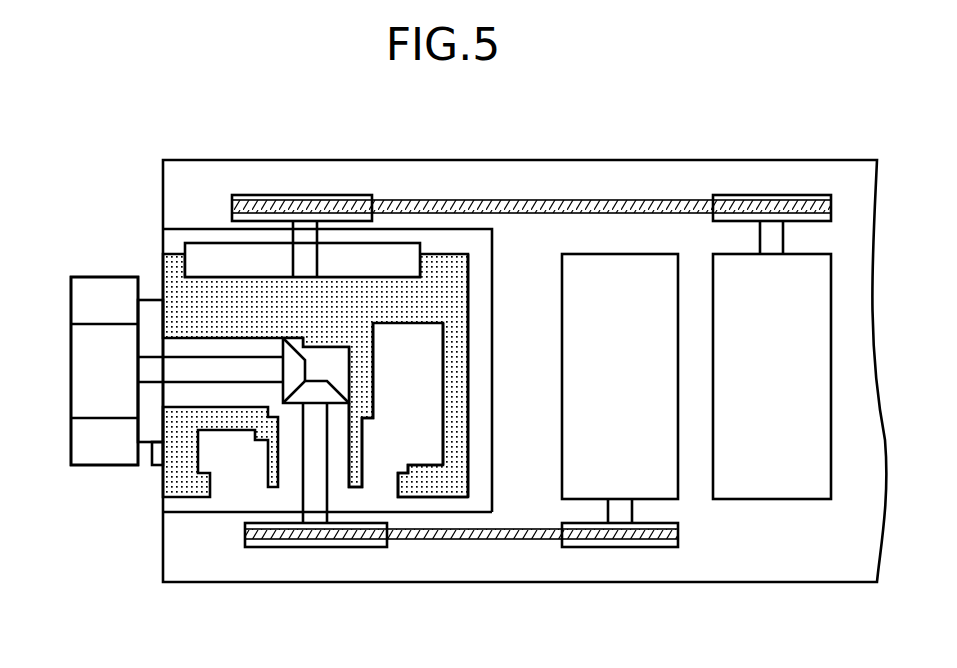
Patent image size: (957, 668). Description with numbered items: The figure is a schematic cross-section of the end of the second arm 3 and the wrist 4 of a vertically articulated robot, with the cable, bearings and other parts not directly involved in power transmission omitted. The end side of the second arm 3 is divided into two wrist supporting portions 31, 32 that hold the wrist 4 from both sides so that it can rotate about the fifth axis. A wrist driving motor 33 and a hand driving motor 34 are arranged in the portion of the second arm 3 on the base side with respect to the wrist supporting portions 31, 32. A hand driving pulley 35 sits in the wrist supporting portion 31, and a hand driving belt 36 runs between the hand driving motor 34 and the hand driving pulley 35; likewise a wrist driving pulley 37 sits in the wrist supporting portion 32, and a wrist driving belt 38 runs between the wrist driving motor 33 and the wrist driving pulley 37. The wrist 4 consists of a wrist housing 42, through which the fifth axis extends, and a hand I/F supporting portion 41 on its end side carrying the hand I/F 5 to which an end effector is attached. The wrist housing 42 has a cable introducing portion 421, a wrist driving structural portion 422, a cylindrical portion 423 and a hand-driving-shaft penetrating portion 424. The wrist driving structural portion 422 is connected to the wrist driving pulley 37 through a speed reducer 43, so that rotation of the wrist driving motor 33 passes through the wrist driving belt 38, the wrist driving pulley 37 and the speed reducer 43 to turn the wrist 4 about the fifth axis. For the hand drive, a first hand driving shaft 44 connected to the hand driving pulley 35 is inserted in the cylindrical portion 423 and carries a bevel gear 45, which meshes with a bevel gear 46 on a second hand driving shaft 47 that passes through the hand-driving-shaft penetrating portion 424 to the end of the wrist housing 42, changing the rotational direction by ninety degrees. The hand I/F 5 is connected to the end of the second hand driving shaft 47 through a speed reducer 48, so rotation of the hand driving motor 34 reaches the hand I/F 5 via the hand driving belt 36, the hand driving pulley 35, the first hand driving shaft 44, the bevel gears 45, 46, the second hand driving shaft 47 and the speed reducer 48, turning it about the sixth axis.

The second arm 3 is at (756, 565).
The wrist supporting portion 31 is at (180, 570).
The wrist supporting portion 32 is at (215, 183).
The wrist driving motor 33 is at (811, 270).
The hand driving motor 34 is at (630, 270).
The hand driving pulley 35 is at (328, 547).
The hand driving belt 36 is at (488, 533).
The wrist driving pulley 37 is at (275, 194).
The wrist driving belt 38 is at (523, 206).
The wrist 4 is at (335, 302).
The hand I/F supporting portion 41 is at (90, 288).
The wrist housing 42 is at (477, 451).
The speed reducer 43 is at (385, 253).
The first hand driving shaft 44 is at (310, 490).
The bevel gear 45 is at (305, 390).
The bevel gear 46 is at (283, 352).
The second hand driving shaft 47 is at (173, 367).
The speed reducer 48 is at (148, 465).
The hand interface 5 is at (83, 366).
The cable introducing portion 421 is at (418, 490).
The wrist driving structural portion 422 is at (443, 263).
The cylindrical portion 423 is at (357, 468).
The hand-driving-shaft penetrating portion 424 is at (228, 418).